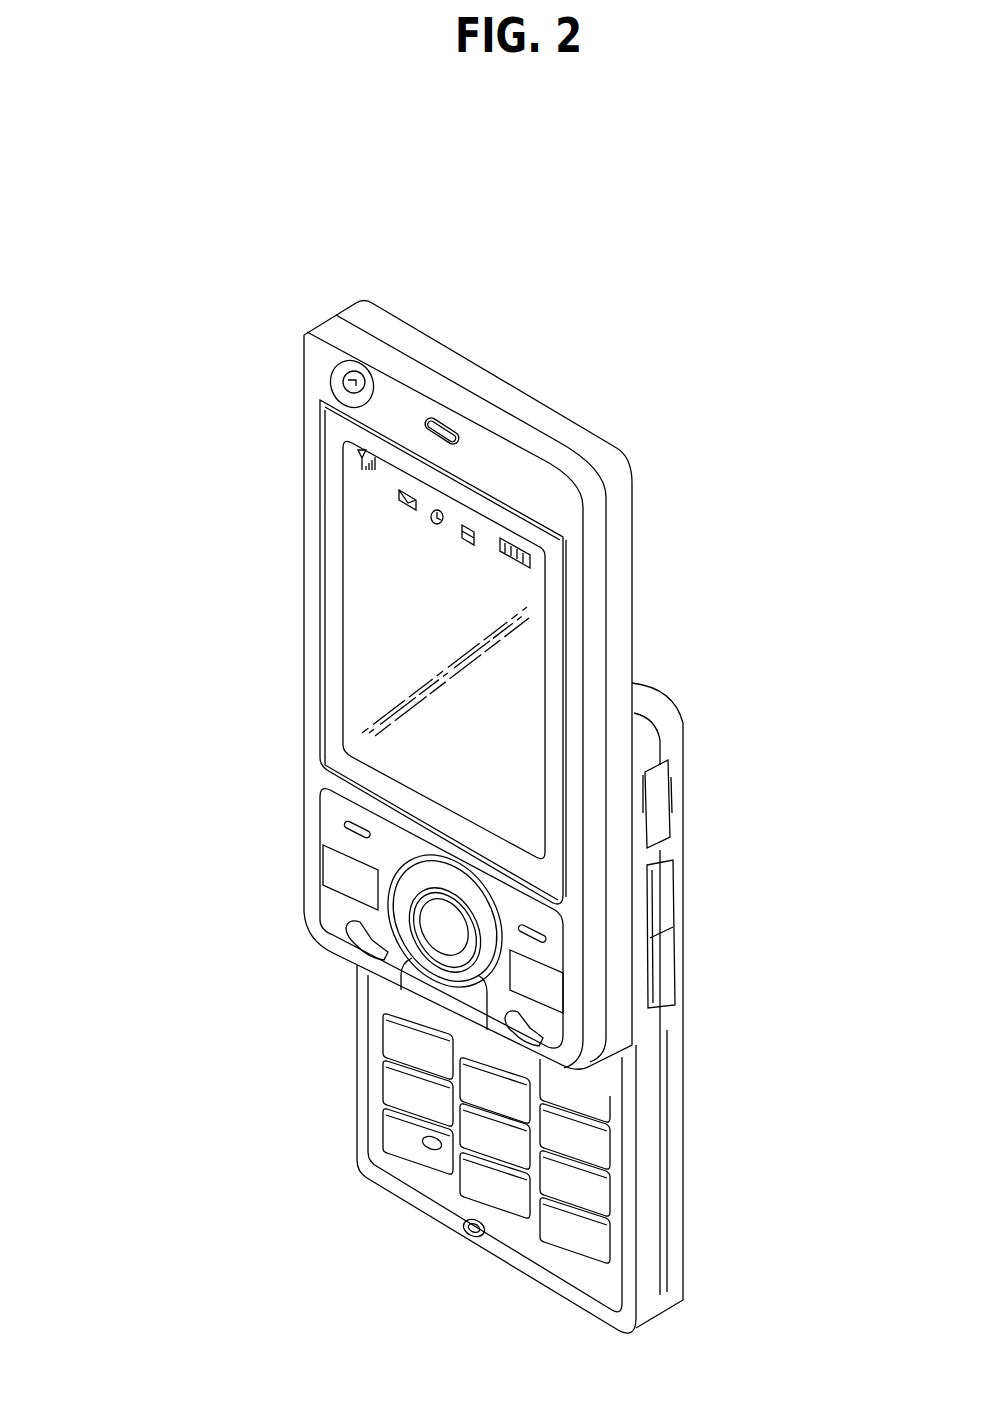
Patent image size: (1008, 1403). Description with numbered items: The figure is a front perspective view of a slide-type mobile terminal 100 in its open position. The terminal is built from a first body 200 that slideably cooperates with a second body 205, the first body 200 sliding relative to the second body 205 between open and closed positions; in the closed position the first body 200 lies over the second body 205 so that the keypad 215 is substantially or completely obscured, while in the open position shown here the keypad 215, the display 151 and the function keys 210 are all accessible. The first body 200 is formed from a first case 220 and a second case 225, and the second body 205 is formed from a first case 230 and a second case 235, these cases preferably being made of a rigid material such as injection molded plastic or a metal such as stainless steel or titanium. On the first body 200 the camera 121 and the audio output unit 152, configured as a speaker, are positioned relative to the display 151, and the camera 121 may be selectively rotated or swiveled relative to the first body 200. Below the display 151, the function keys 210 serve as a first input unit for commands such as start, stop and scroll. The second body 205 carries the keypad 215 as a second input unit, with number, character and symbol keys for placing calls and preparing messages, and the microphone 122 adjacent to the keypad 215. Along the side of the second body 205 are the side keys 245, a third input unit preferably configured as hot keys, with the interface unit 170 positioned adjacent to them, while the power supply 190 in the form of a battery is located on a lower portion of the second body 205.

The mobile terminal 100 is at (660, 342).
The first body 200 is at (268, 476).
The second body 205 is at (352, 1059).
The function keys 210 is at (340, 867).
The keypad 215 is at (392, 1123).
The first case 220 is at (595, 573).
The second case 225 is at (622, 528).
The first case 230 is at (643, 730).
The second case 235 is at (672, 758).
The side keys 245 is at (665, 967).
The interface unit 170 is at (662, 797).
The power supply 190 is at (675, 1140).
The display 151 is at (360, 587).
The audio output unit 152 is at (443, 425).
The camera 121 is at (350, 383).
The microphone 122 is at (477, 1237).